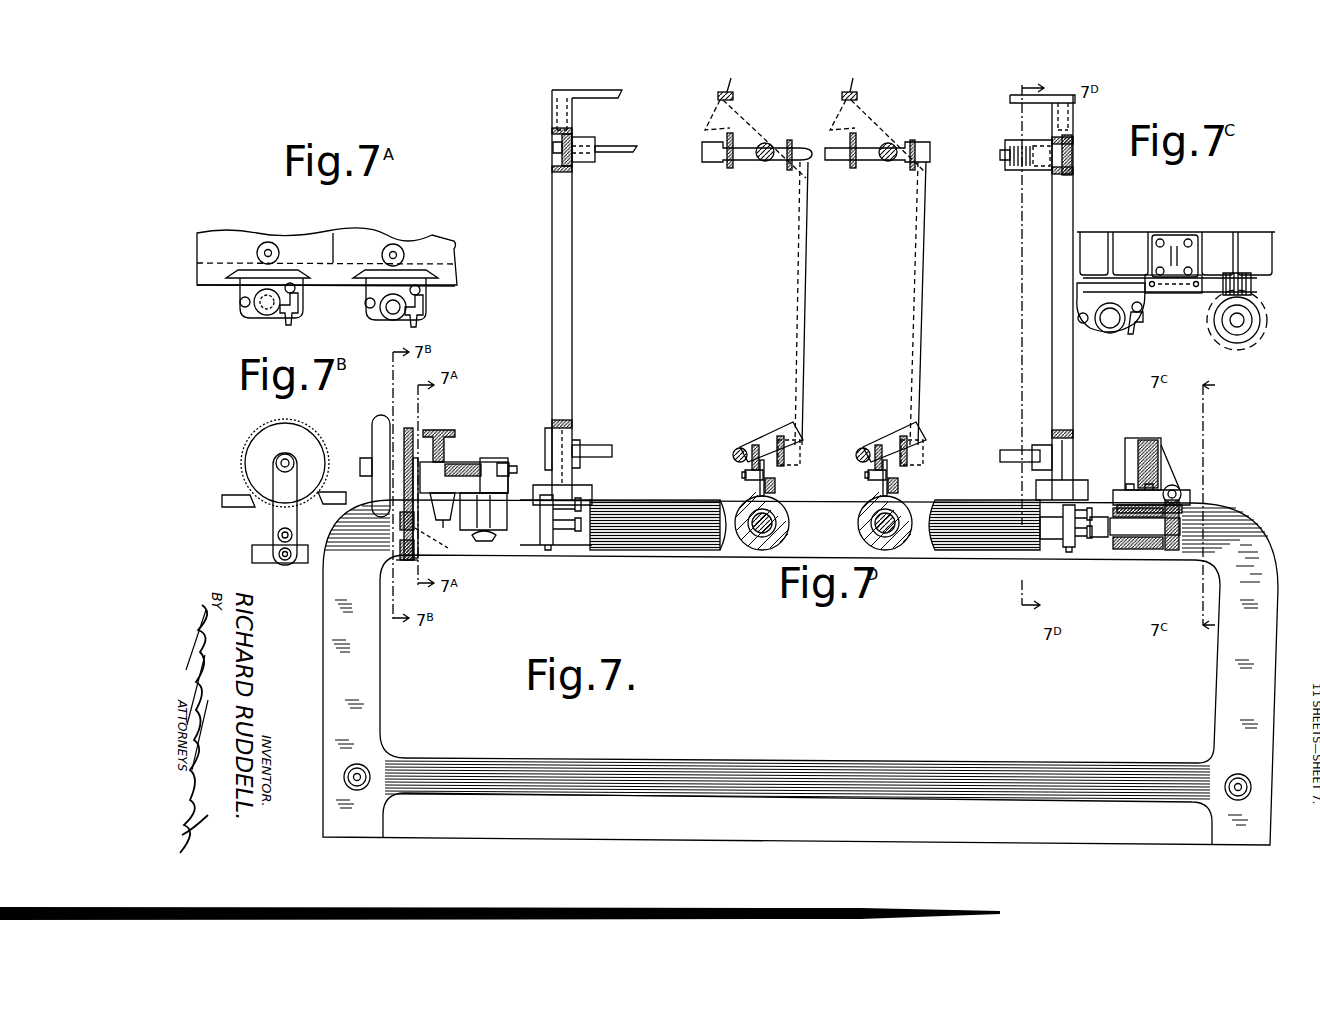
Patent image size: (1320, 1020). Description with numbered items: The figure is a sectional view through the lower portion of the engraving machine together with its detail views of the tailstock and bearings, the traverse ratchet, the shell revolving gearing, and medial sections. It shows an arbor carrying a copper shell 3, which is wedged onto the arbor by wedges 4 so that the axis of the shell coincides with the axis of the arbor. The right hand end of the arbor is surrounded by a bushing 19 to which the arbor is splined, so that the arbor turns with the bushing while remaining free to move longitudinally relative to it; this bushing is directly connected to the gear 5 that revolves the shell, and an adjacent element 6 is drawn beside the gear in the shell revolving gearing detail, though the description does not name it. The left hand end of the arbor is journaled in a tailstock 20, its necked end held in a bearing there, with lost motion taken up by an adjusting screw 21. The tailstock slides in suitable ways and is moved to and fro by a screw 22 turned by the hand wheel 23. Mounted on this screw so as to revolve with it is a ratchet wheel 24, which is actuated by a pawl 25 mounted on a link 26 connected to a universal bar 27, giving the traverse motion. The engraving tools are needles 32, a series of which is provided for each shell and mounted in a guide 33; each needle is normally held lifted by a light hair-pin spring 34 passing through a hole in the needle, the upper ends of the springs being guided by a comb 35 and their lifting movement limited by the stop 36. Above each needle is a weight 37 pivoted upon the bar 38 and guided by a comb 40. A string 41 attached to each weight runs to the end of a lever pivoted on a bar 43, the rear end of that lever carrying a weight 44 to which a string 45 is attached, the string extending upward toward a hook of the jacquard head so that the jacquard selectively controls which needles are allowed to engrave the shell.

In FIG. 7, the copper shell 3 is at (752, 540).
In FIG. 7D, the copper shell 3 is at (823, 521).
In FIG. 7, the wedge 4 is at (560, 542).
In FIG. 7C, the gear 5 is at (1255, 318).
In FIG. 7, the gear 5 is at (1188, 506).
In FIG. 7C, the roller clamp 6 is at (1250, 286).
In FIG. 7, the roller clamp 6 is at (1180, 486).
In FIG. 7, the bushing 19 is at (1160, 548).
In FIG. 7A, the tailstock 20 is at (474, 252).
In FIG. 7, the tailstock 20 is at (486, 474).
In FIG. 7A, the adjusting screw 21 is at (388, 315).
In FIG. 7, the adjusting screw 21 is at (442, 490).
In FIG. 7A, the screw 22 is at (330, 254).
In FIG. 7, the screw 22 is at (506, 470).
In FIG. 7, the hand wheel 23 is at (378, 436).
In FIG. 7B, the ratchet wheel 24 is at (260, 455).
In FIG. 7, the ratchet wheel 24 is at (416, 456).
In FIG. 7B, the pawl 25 is at (300, 526).
In FIG. 7, the pawl 25 is at (418, 535).
In FIG. 7B, the link 26 is at (278, 512).
In FIG. 7, the link 26 is at (408, 432).
In FIG. 7B, the universal bar 27 is at (276, 564).
In FIG. 7, the universal bar 27 is at (418, 544).
In FIG. 7D, the needle 32 is at (885, 496).
In FIG. 7D, the guide 33 is at (776, 488).
In FIG. 7D, the hair-pin spring 34 is at (744, 474).
In FIG. 7D, the comb 35 is at (756, 478).
In FIG. 7D, the stop 36 is at (785, 470).
In FIG. 7D, the weight 37 is at (766, 438).
In FIG. 7, the bar 38 is at (598, 450).
In FIG. 7D, the bar 38 is at (740, 448).
In FIG. 7D, the comb 40 is at (798, 460).
In FIG. 7, the string 41 is at (920, 226).
In FIG. 7, the bar 43 is at (766, 144).
In FIG. 7, the weight 44 is at (702, 152).
In FIG. 7, the string 45 is at (720, 110).